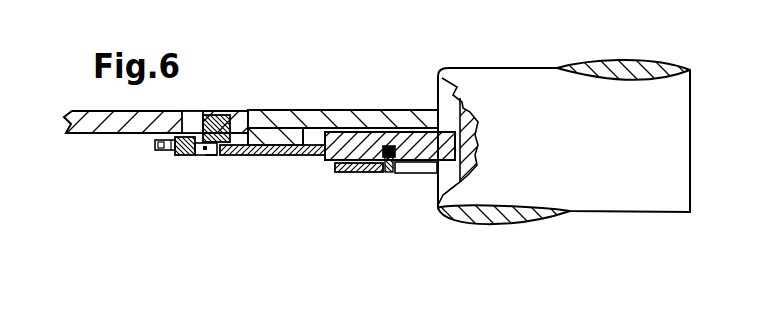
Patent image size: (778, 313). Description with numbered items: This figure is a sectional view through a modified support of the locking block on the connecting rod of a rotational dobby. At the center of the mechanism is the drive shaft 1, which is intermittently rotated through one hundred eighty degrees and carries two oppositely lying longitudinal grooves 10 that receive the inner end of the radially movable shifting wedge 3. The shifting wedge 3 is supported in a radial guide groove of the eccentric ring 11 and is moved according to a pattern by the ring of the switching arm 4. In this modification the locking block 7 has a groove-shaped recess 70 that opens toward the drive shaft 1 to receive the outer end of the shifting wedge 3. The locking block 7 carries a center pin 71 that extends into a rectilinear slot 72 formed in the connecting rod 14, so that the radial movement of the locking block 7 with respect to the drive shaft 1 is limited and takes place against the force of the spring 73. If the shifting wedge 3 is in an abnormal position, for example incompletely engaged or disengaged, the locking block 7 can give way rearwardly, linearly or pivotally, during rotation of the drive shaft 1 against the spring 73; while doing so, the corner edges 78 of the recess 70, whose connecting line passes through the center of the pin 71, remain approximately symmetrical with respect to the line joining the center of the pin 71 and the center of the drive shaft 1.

The drive shaft 1 is at (613, 182).
The shifting wedge 3 is at (282, 149).
The switching arm 4 is at (352, 168).
The locking block 7 is at (177, 153).
The longitudinal grooves 10 is at (450, 174).
The eccentric ring 11 is at (363, 118).
The connecting rod 14 is at (101, 120).
The groove-shaped recess 70 is at (203, 156).
The center pin 71 is at (226, 116).
The rectilinear slot 72 is at (193, 118).
The spring 73 is at (156, 151).
The corner edges 78 is at (213, 156).